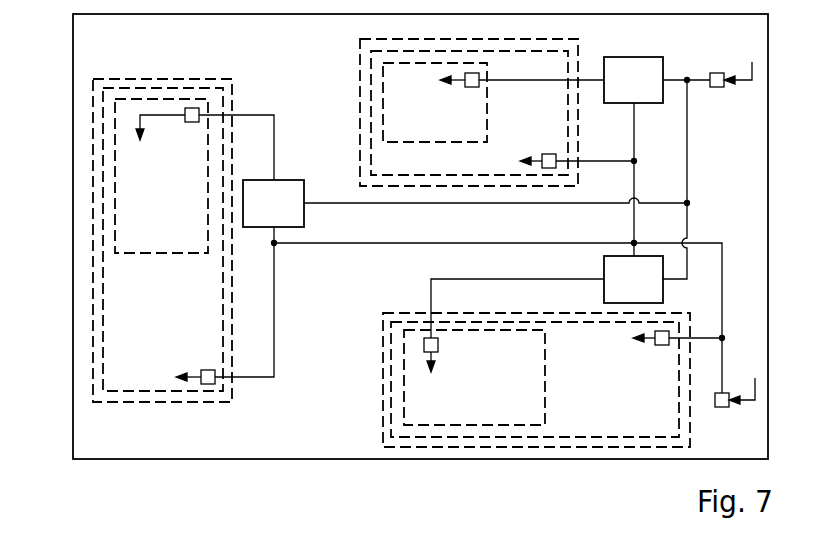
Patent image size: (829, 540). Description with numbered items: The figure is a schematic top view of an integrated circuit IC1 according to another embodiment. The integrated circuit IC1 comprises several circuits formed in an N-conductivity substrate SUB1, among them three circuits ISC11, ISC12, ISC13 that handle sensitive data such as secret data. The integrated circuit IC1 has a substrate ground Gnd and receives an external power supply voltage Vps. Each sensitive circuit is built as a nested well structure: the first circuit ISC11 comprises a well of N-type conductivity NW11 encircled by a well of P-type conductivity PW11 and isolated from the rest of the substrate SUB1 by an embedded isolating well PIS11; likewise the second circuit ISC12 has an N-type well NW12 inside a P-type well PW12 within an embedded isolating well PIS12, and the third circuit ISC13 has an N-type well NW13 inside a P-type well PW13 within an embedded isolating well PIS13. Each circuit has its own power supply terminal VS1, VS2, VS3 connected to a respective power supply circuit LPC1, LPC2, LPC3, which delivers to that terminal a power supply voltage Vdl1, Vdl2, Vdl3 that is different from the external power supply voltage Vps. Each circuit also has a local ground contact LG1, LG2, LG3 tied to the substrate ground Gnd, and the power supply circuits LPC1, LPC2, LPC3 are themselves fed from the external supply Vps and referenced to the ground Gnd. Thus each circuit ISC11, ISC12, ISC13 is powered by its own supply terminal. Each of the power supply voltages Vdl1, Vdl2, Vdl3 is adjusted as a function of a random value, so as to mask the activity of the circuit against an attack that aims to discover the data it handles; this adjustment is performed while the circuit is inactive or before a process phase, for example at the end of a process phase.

The integrated circuit IC1 is at (73, 459).
The substrate SUB1 is at (136, 449).
The embedded isolating well PIS11 is at (215, 402).
The well of P-type conductivity PW11 is at (223, 385).
The well of N-type conductivity NW11 is at (175, 98).
The circuit ISC11 is at (190, 306).
The power supply terminal VS1 is at (187, 123).
The power supply voltage Vdl1 is at (142, 151).
The local ground terminal LG1 is at (203, 370).
The power supply circuit LPC1 is at (300, 216).
The embedded isolating well PIS12 is at (358, 56).
The well of P-type conductivity PW12 is at (369, 112).
The well of N-type conductivity NW12 is at (381, 92).
The circuit ISC12 is at (440, 171).
The power supply terminal VS2 is at (472, 87).
The power supply voltage Vdl2 is at (415, 81).
The local ground terminal LG2 is at (546, 154).
The power supply circuit LPC2 is at (660, 92).
The external power supply voltage Vps is at (716, 73).
The embedded isolating well PIS13 is at (382, 436).
The well of P-type conductivity PW13 is at (391, 360).
The well of N-type conductivity NW13 is at (404, 336).
The circuit ISC13 is at (670, 424).
The power supply terminal VS3 is at (438, 345).
The power supply voltage Vdl3 is at (431, 388).
The local ground terminal LG3 is at (660, 345).
The power supply circuit LPC3 is at (660, 292).
The substrate ground Gnd is at (721, 407).